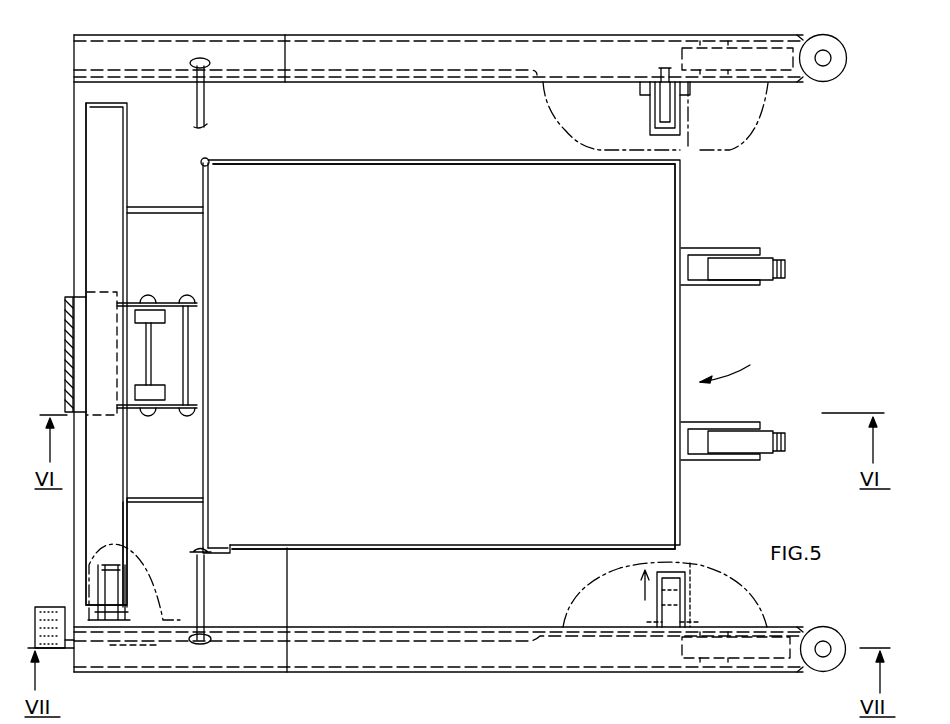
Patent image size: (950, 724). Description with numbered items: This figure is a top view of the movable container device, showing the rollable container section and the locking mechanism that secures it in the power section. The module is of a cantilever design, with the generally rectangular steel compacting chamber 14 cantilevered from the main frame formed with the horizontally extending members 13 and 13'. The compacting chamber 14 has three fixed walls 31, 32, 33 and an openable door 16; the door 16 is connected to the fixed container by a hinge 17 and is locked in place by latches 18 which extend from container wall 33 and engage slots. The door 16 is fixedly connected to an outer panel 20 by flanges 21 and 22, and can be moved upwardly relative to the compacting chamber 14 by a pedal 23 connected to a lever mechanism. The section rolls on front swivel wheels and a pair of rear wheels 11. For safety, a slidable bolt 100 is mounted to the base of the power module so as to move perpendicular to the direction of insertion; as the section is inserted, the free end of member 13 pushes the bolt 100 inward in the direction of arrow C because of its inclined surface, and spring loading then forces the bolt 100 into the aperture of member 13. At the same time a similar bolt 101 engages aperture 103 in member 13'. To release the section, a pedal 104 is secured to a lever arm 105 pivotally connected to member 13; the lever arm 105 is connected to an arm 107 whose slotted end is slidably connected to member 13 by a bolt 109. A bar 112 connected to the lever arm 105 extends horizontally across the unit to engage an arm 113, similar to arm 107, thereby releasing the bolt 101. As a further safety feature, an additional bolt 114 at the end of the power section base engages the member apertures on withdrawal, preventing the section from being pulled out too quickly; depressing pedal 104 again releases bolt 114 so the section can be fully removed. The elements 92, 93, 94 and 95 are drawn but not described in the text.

The rear wheels 11 is at (755, 50).
The horizontally extending member 13 is at (438, 610).
The horizontally extending member 13' is at (438, 82).
The compacting chamber 14 is at (735, 363).
The door 16 is at (211, 292).
The hinge 17 is at (210, 158).
The latches 18 is at (195, 553).
The outer panel 20 is at (95, 532).
The flange 21 is at (186, 502).
The flange 22 is at (175, 207).
The pedal 23 is at (62, 297).
The fixed wall 31 is at (480, 166).
The fixed wall 32 is at (672, 310).
The fixed wall 33 is at (455, 530).
The lower latch cylinder 92 is at (785, 445).
The upper latch cylinder 93 is at (785, 272).
The lower pivot lug 94 is at (840, 628).
The upper pivot lug 95 is at (838, 82).
The slidable bolt 100 is at (695, 595).
The bolt 101 is at (658, 122).
The aperture 103 is at (662, 80).
The pedal 104 is at (58, 594).
The lever arm 105 is at (165, 647).
The arm 107 is at (473, 635).
The bolt 109 is at (614, 618).
The bar 112 is at (205, 104).
The arm 113 is at (388, 69).
The additional bolt 114 is at (115, 590).